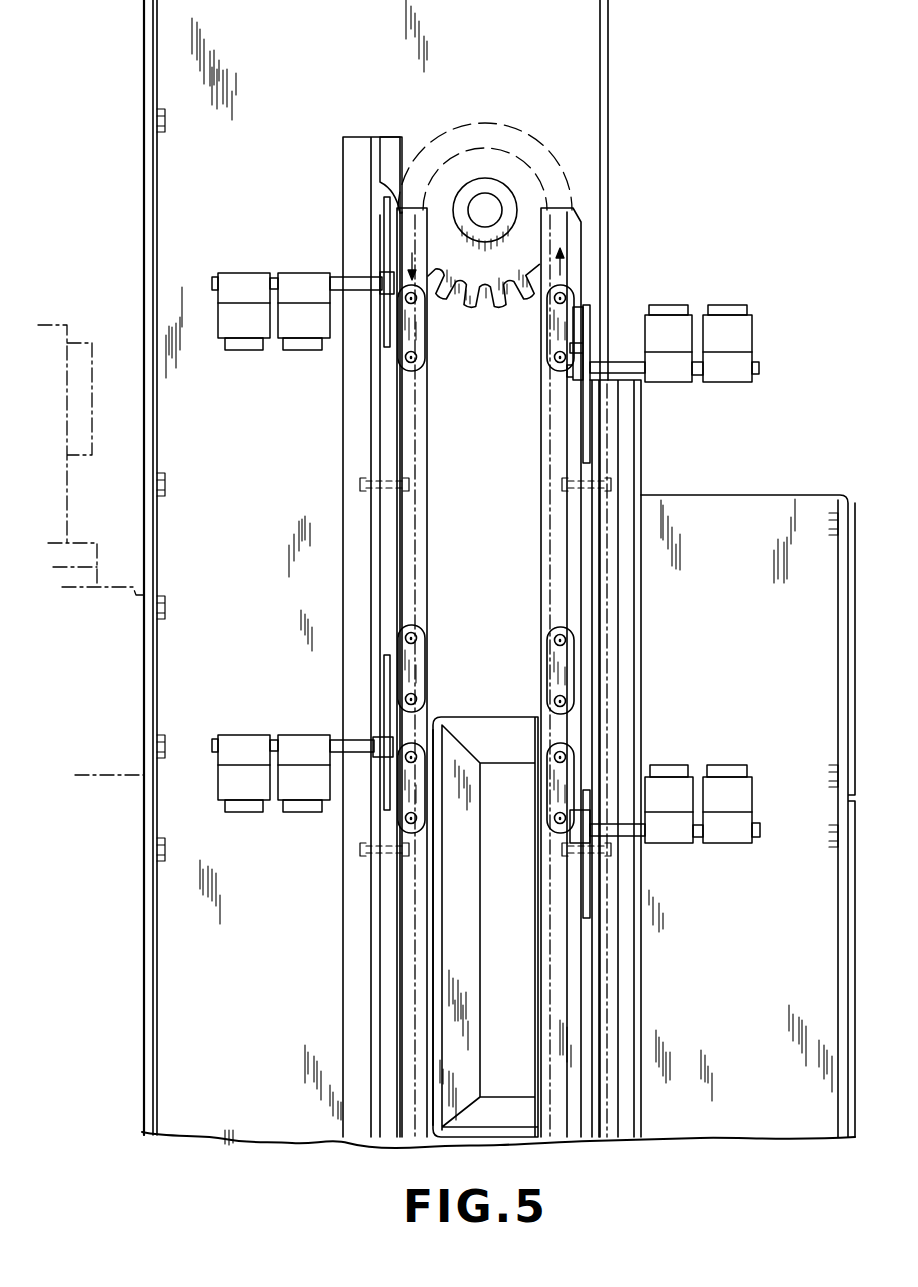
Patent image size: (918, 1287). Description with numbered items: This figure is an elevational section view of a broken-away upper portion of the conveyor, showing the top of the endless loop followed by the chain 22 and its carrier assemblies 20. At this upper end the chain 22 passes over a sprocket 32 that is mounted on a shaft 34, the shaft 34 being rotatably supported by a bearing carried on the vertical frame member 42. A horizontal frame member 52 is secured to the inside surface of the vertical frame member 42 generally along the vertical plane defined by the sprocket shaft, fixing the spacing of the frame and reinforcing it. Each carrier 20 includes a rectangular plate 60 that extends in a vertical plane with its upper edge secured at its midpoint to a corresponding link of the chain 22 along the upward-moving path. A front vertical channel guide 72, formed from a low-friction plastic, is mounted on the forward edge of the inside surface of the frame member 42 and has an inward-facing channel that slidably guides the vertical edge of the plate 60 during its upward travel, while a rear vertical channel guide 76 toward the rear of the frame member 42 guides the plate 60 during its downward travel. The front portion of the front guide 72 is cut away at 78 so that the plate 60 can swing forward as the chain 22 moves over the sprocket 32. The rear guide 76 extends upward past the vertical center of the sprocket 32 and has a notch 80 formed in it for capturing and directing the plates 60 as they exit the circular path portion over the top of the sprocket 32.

The carrier assembly 20 is at (757, 327).
The chain 22 is at (550, 667).
The sprocket 32 is at (470, 312).
The shaft 34 is at (478, 160).
The vertical frame member 42 is at (519, 826).
The horizontal frame member 52 is at (437, 880).
The rectangular plate 60 is at (384, 206).
The front vertical channel guide 72 is at (598, 458).
The rear vertical channel guide 76 is at (379, 148).
The cut away 78 is at (590, 355).
The notch 80 is at (390, 172).